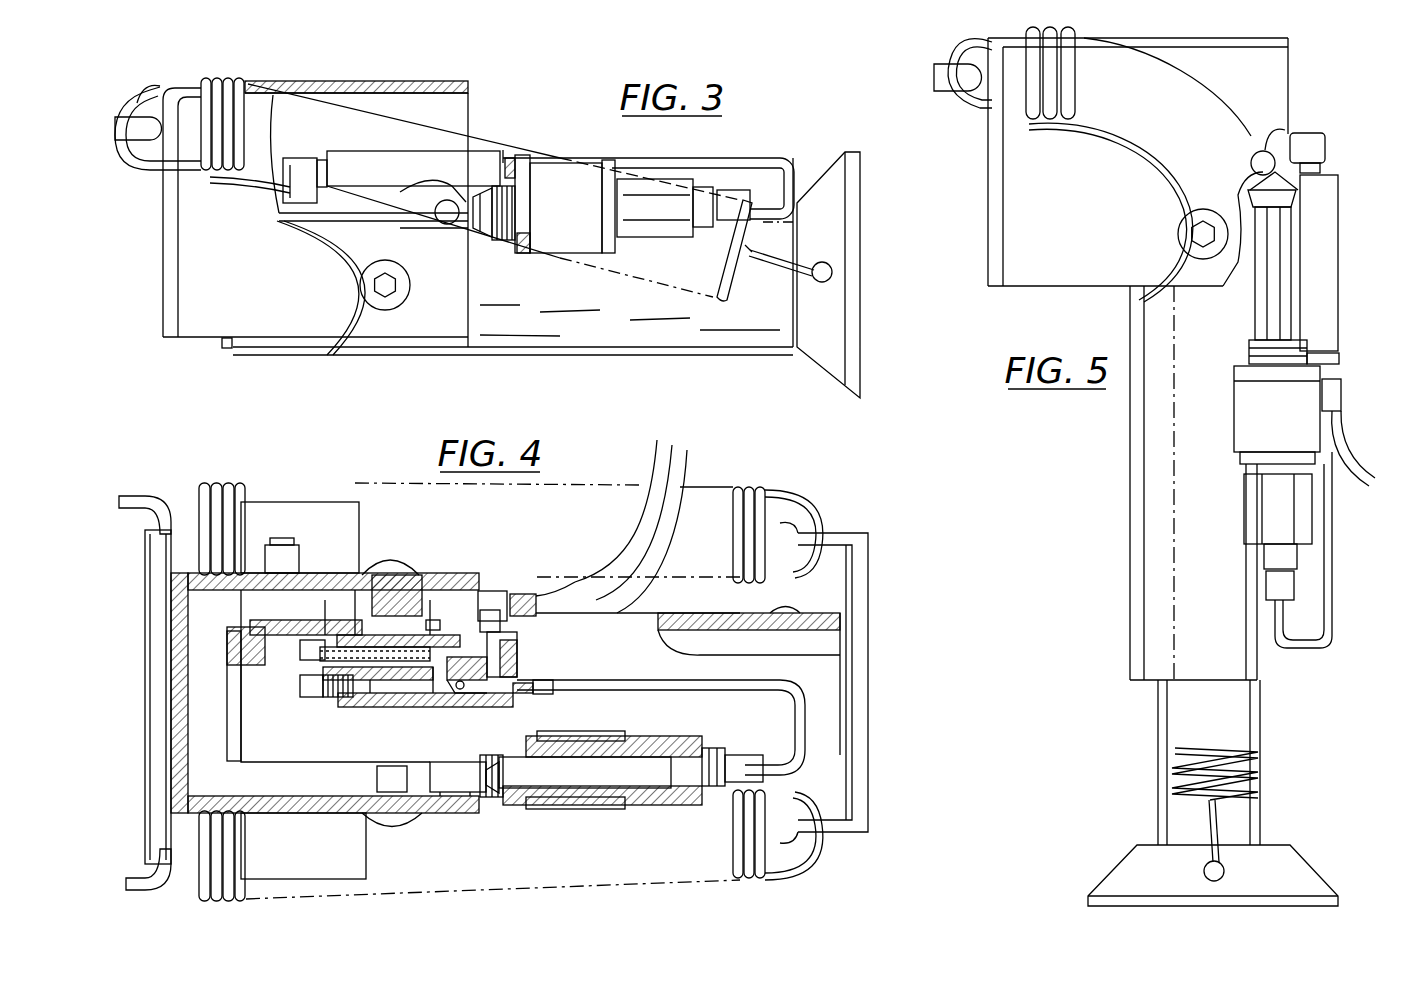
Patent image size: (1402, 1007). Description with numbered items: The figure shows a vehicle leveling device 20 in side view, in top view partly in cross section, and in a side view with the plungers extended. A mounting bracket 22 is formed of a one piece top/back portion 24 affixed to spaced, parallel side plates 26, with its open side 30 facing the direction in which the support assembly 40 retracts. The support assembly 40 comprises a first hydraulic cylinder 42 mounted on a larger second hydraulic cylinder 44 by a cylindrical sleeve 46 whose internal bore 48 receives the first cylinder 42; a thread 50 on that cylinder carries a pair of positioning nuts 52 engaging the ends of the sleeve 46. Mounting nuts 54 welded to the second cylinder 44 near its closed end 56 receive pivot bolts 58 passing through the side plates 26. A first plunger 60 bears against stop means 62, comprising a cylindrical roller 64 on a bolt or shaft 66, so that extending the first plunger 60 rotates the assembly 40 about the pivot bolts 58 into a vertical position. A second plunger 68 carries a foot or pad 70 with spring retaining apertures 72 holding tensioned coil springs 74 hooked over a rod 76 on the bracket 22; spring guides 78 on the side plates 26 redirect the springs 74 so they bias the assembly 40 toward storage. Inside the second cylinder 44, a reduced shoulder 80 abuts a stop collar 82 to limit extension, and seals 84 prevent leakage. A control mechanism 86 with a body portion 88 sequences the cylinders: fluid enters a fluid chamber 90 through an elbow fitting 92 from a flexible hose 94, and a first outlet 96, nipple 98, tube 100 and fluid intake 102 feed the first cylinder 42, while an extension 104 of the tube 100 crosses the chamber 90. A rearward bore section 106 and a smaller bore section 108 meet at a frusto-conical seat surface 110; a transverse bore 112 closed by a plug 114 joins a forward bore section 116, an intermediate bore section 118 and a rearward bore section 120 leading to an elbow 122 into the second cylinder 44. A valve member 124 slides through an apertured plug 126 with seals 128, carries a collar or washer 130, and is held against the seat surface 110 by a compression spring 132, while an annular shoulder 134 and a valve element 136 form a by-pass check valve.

In FIG. 3, the leveling device 20 is at (290, 357).
In FIG. 4, the leveling device 20 is at (493, 805).
In FIG. 5, the leveling device 20 is at (1120, 292).
In FIG. 3, the mounting bracket 22 is at (163, 186).
In FIG. 4, the mounting bracket 22 is at (168, 804).
In FIG. 5, the mounting bracket 22 is at (982, 125).
In FIG. 3, the top/back portion 24 is at (320, 86).
In FIG. 4, the top/back portion 24 is at (180, 750).
In FIG. 5, the top/back portion 24 is at (988, 216).
In FIG. 3, the side plates 26 is at (217, 294).
In FIG. 4, the side plates 26 is at (245, 582).
In FIG. 5, the side plates 26 is at (1074, 231).
In FIG. 3, the open side 30 is at (460, 103).
In FIG. 5, the open side 30 is at (1290, 50).
In FIG. 3, the support assembly 40 is at (495, 357).
In FIG. 4, the support assembly 40 is at (627, 610).
In FIG. 5, the support assembly 40 is at (1127, 448).
In FIG. 3, the first hydraulic cylinder 42 is at (640, 240).
In FIG. 4, the first hydraulic cylinder 42 is at (647, 790).
In FIG. 5, the first hydraulic cylinder 42 is at (1246, 515).
In FIG. 3, the second hydraulic cylinder 44 is at (585, 306).
In FIG. 4, the second hydraulic cylinder 44 is at (647, 667).
In FIG. 5, the second hydraulic cylinder 44 is at (1177, 436).
In FIG. 3, the cylindrical sleeve 46 is at (543, 240).
In FIG. 4, the cylindrical sleeve 46 is at (606, 736).
In FIG. 5, the cylindrical sleeve 46 is at (1305, 400).
In FIG. 4, the internal bore 48 is at (583, 735).
In FIG. 3, the thread 50 is at (508, 240).
In FIG. 4, the thread 50 is at (530, 803).
In FIG. 5, the thread 50 is at (1252, 350).
In FIG. 3, the positioning nuts 52 is at (527, 170).
In FIG. 4, the positioning nuts 52 is at (616, 810).
In FIG. 5, the positioning nuts 52 is at (1234, 373).
In FIG. 4, the mounting nuts 54 is at (359, 590).
In FIG. 3, the closed end 56 is at (222, 345).
In FIG. 4, the closed end 56 is at (228, 705).
In FIG. 3, the pivot bolts 58 is at (403, 288).
In FIG. 4, the pivot bolts 58 is at (377, 566).
In FIG. 5, the pivot bolts 58 is at (1206, 208).
In FIG. 4, the first plunger 60 is at (585, 772).
In FIG. 5, the first plunger 60 is at (1270, 285).
In FIG. 4, the stop means 62 is at (456, 797).
In FIG. 4, the cylindrical roller 64 is at (467, 796).
In FIG. 5, the cylindrical roller 64 is at (1290, 160).
In FIG. 4, the bolt or shaft 66 is at (469, 766).
In FIG. 5, the bolt or shaft 66 is at (1258, 150).
In FIG. 4, the second plunger 68 is at (834, 639).
In FIG. 5, the second plunger 68 is at (1260, 720).
In FIG. 3, the foot or pad 70 is at (842, 210).
In FIG. 4, the foot or pad 70 is at (868, 690).
In FIG. 5, the foot or pad 70 is at (1245, 905).
In FIG. 3, the spring retaining apertures 72 is at (834, 272).
In FIG. 5, the spring retaining apertures 72 is at (1222, 876).
In FIG. 3, the tensioned coil springs 74 is at (727, 303).
In FIG. 4, the tensioned coil springs 74 is at (752, 492).
In FIG. 5, the tensioned coil springs 74 is at (1077, 68).
In FIG. 3, the rod 76 is at (118, 128).
In FIG. 4, the rod 76 is at (130, 497).
In FIG. 5, the rod 76 is at (938, 86).
In FIG. 3, the spring guides 78 is at (350, 260).
In FIG. 4, the spring guides 78 is at (288, 531).
In FIG. 5, the spring guides 78 is at (1100, 135).
In FIG. 4, the reduced shoulder 80 is at (712, 621).
In FIG. 4, the stop collar 82 is at (272, 642).
In FIG. 4, the seals 84 is at (786, 606).
In FIG. 3, the control mechanism 86 is at (418, 150).
In FIG. 4, the control mechanism 86 is at (353, 713).
In FIG. 5, the control mechanism 86 is at (1320, 248).
In FIG. 4, the body portion 88 is at (372, 695).
In FIG. 4, the fluid chamber 90 is at (513, 652).
In FIG. 4, the elbow fitting 92 is at (493, 597).
In FIG. 4, the flexible hose 94 is at (640, 515).
In FIG. 5, the flexible hose 94 is at (1347, 482).
In FIG. 4, the first outlet 96 is at (518, 667).
In FIG. 3, the nipple 98 is at (513, 165).
In FIG. 4, the nipple 98 is at (547, 694).
In FIG. 5, the nipple 98 is at (1332, 360).
In FIG. 3, the tube 100 is at (727, 160).
In FIG. 4, the tube 100 is at (748, 676).
In FIG. 5, the tube 100 is at (1332, 620).
In FIG. 3, the fluid intake 102 is at (700, 187).
In FIG. 4, the fluid intake 102 is at (702, 784).
In FIG. 5, the fluid intake 102 is at (1297, 555).
In FIG. 4, the extension 104 is at (520, 693).
In FIG. 4, the rearward bore section 106 is at (352, 612).
In FIG. 4, the smaller bore section 108 is at (445, 633).
In FIG. 4, the frusto-conical seat surface 110 is at (428, 612).
In FIG. 4, the transverse bore 112 is at (380, 640).
In FIG. 4, the plug 114 is at (438, 626).
In FIG. 4, the forward bore section 116 is at (468, 689).
In FIG. 4, the intermediate bore section 118 is at (447, 690).
In FIG. 4, the rearward bore section 120 is at (377, 695).
In FIG. 3, the elbow 122 is at (292, 160).
In FIG. 4, the elbow 122 is at (308, 699).
In FIG. 5, the elbow 122 is at (1328, 140).
In FIG. 4, the valve member 124 is at (280, 620).
In FIG. 4, the apertured plug 126 is at (325, 658).
In FIG. 4, the seals 128 is at (323, 634).
In FIG. 4, the collar or washer 130 is at (418, 640).
In FIG. 4, the compression spring 132 is at (300, 695).
In FIG. 4, the annular shoulder 134 is at (455, 689).
In FIG. 4, the valve element 136 is at (463, 693).